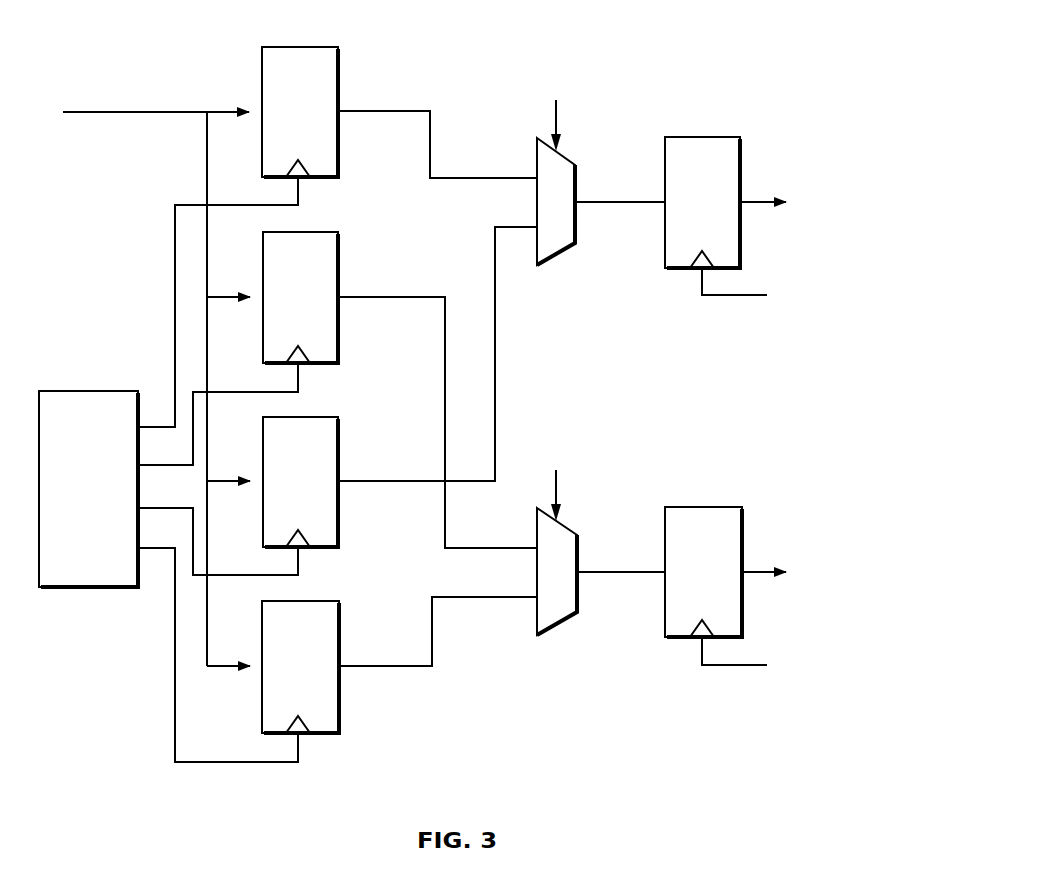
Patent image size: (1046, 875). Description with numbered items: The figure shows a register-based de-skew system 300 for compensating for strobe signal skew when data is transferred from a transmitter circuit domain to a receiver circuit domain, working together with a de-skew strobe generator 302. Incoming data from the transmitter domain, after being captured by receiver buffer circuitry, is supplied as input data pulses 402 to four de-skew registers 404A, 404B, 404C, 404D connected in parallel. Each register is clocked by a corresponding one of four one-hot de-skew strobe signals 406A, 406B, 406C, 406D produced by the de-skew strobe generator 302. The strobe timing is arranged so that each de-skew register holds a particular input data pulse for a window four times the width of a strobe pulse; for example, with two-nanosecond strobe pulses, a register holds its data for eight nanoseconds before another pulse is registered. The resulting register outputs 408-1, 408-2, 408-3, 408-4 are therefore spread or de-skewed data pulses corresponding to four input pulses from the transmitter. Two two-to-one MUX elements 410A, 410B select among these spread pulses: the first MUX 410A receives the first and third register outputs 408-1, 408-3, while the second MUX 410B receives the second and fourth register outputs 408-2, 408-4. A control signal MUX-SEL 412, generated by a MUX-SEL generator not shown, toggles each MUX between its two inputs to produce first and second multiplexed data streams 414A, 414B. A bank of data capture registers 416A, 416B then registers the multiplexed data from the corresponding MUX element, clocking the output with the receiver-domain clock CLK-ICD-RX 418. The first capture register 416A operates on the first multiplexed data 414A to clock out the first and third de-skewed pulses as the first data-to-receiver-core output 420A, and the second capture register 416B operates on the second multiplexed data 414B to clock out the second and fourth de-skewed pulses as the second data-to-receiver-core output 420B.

The register-based de-skew system 300 is at (741, 83).
The de-skew strobe generator 302 is at (107, 572).
The input data pulses 402 is at (140, 112).
The de-skew register 404A is at (325, 125).
The de-skew register 404B is at (325, 310).
The de-skew register 404C is at (325, 492).
The de-skew register 404D is at (325, 678).
The de-skew strobe signal 406A is at (300, 187).
The de-skew strobe signal 406B is at (300, 372).
The de-skew strobe signal 406C is at (300, 556).
The de-skew strobe signal 406D is at (300, 742).
The D1 output 408-1 is at (378, 111).
The D2 output 408-2 is at (378, 297).
The D3 output 408-3 is at (433, 481).
The D4 output 408-4 is at (377, 666).
The 2:1 MUX element 410A is at (560, 255).
The 2:1 MUX element 410B is at (560, 627).
The MUX-SEL control signal 412 is at (555, 130).
The multiplexed data m-d[0] 414A is at (583, 200).
The multiplexed data m-d[1] 414B is at (582, 568).
The data capture register 416A is at (728, 215).
The data capture register 416B is at (728, 582).
The CLK-ICD-RX clock signal 418 is at (718, 295).
The DATA-TO-RX-CORE[0] output 420A is at (762, 200).
The DATA-TO-RX-CORE[1] output 420B is at (763, 568).